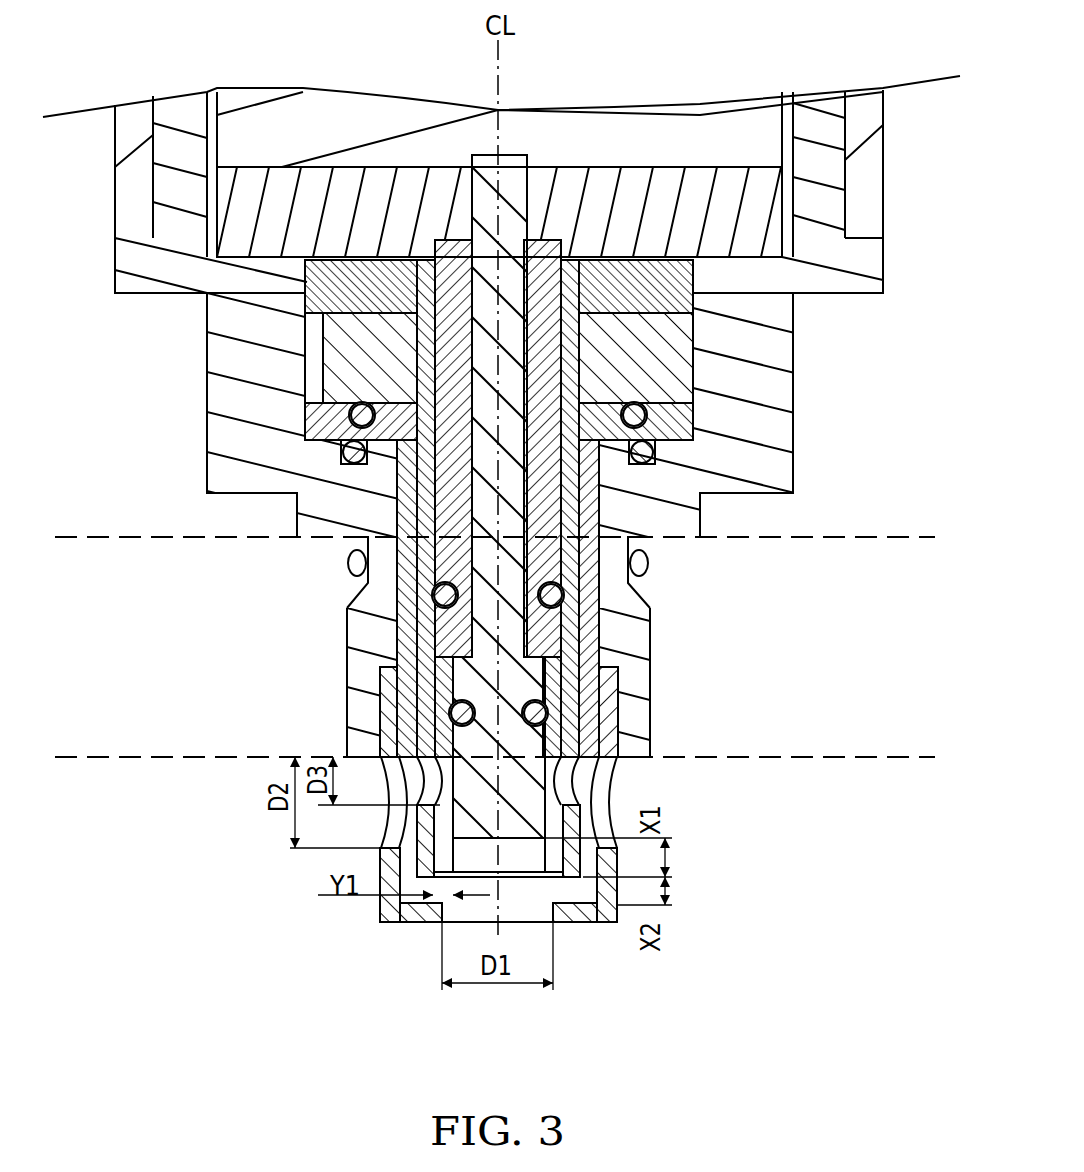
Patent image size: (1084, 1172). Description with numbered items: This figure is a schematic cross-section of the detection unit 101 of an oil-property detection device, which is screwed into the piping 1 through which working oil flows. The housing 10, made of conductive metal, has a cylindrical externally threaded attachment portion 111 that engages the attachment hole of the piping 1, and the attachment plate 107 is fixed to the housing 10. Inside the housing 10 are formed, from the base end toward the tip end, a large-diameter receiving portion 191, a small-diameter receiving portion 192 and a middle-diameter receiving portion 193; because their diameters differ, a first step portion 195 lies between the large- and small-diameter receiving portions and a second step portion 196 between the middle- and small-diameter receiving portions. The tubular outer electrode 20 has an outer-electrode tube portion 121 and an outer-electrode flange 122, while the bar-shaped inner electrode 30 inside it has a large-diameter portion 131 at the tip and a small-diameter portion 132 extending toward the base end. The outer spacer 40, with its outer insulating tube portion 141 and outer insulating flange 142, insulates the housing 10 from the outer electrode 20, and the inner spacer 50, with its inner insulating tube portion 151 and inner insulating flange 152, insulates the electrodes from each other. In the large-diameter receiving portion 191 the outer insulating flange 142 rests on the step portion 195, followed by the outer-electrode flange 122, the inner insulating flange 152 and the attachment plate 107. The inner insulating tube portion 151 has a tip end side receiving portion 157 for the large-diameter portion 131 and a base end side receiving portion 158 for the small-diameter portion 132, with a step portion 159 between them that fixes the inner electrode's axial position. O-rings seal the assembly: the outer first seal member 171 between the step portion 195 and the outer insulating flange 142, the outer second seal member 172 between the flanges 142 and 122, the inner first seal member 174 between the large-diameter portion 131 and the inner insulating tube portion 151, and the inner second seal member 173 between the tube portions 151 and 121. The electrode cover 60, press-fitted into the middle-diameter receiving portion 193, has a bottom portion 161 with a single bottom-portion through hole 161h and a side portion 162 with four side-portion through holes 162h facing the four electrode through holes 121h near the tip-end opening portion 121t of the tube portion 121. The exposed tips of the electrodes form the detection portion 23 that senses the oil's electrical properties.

The piping 1 is at (113, 537).
The housing 10 is at (883, 260).
The outer electrode 20 is at (565, 588).
The detection portion 23 is at (552, 855).
The inner electrode 30 is at (507, 328).
The outer spacer 40 is at (600, 484).
The inner spacer 50 is at (350, 648).
The electrode cover 60 is at (600, 924).
The detection unit 101 is at (118, 392).
The attachment plate 107 is at (770, 213).
The attachment portion 111 is at (347, 735).
The outer-electrode tube portion 121 is at (575, 613).
The electrode through holes 121h is at (565, 769).
The tip-end opening portion 121t is at (560, 925).
The outer-electrode flange 122 is at (658, 360).
The large-diameter portion 131 is at (540, 743).
The small-diameter portion 132 is at (645, 553).
The outer insulating tube portion 141 is at (600, 524).
The outer insulating flange 142 is at (697, 430).
The inner insulating tube portion 151 is at (365, 586).
The inner insulating flange 152 is at (318, 297).
The tip end side receiving portion 157 is at (385, 673).
The base end side receiving portion 158 is at (350, 555).
The step portion 159 is at (548, 651).
The bottom portion 161 is at (390, 924).
The bottom-portion through hole 161h is at (445, 924).
The side portion 162 is at (380, 863).
The side-portion through holes 162h is at (600, 794).
The outer first seal member 171 is at (343, 453).
The outer second seal member 172 is at (352, 417).
The inner second seal member 173 is at (440, 606).
The inner first seal member 174 is at (545, 708).
The large-diameter receiving portion 191 is at (325, 357).
The small-diameter receiving portion 192 is at (395, 488).
The middle-diameter receiving portion 193 is at (380, 708).
The step portion 195 is at (647, 416).
The step portion 196 is at (605, 679).